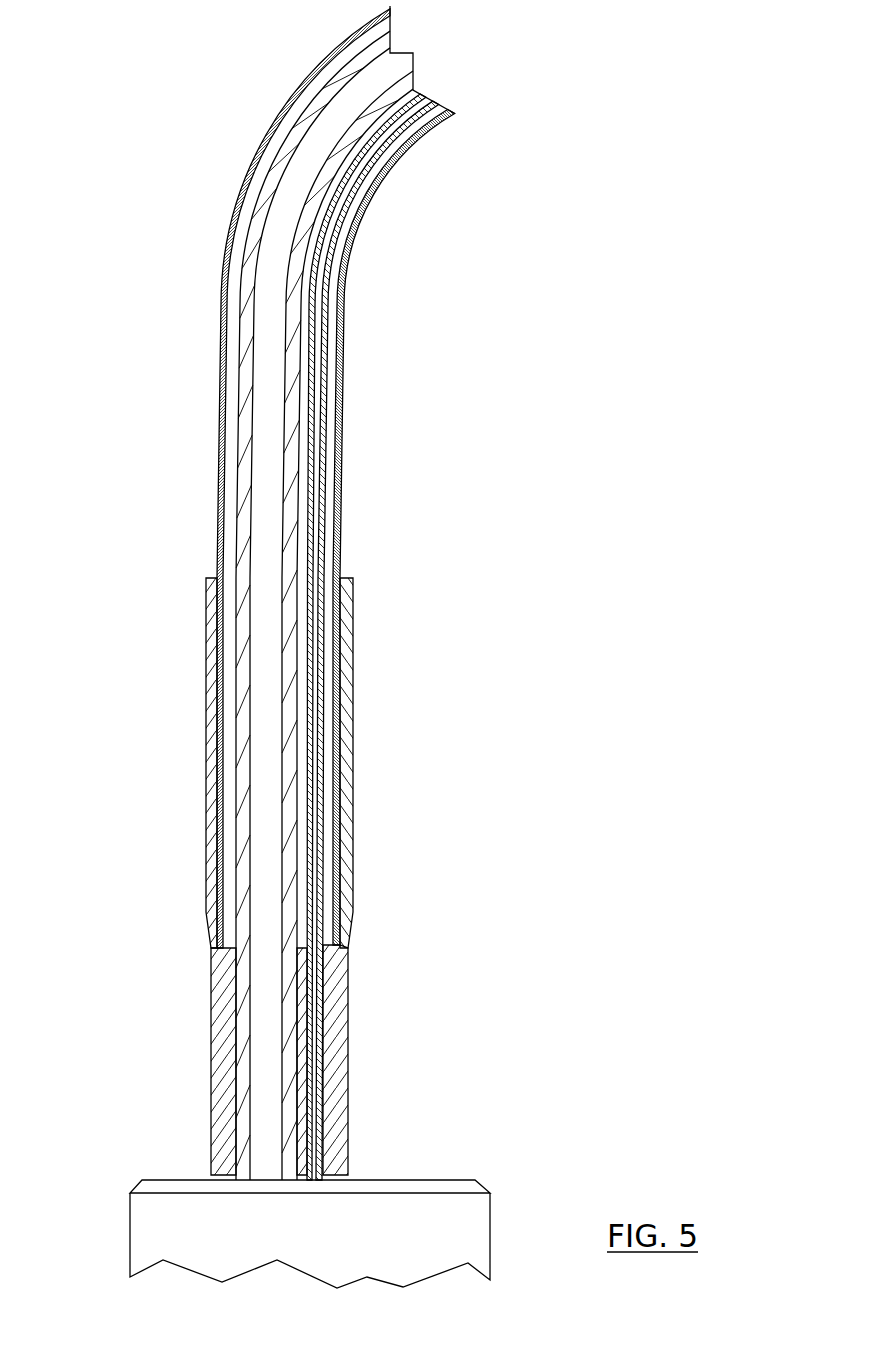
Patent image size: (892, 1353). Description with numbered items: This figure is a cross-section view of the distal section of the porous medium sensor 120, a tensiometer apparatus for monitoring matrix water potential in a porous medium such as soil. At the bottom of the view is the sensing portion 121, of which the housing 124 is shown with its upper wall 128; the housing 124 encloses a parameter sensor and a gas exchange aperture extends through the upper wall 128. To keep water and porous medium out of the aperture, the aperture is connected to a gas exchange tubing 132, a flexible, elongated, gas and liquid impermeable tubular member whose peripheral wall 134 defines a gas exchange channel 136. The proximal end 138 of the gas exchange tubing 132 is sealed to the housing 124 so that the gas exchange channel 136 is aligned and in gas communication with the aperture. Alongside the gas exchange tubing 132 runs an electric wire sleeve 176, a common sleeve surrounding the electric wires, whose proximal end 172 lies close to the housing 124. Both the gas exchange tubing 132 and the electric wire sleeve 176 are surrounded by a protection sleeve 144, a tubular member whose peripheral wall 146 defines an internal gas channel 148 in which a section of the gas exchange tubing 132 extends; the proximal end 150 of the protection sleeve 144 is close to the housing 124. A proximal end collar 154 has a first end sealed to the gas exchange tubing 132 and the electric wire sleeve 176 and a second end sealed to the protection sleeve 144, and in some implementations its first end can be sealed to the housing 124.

The porous medium sensor 120 is at (520, 785).
The sensing portion 121 is at (538, 1203).
The housing 124 is at (150, 1238).
The upper wall 128 is at (443, 1180).
The gas exchange tubing 132 is at (360, 216).
The peripheral wall 134 is at (326, 362).
The gas exchange channel 136 is at (314, 460).
The proximal end 138 is at (316, 1155).
The protection sleeve 144 is at (350, 536).
The peripheral wall 146 is at (220, 344).
The internal gas channel 148 is at (233, 535).
The proximal end 150 is at (343, 944).
The proximal end collar 154 is at (349, 857).
The proximal end 172 is at (242, 1138).
The electric wire sleeve 176 is at (268, 188).